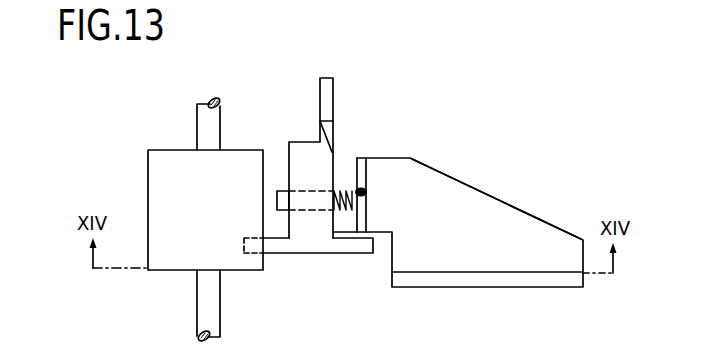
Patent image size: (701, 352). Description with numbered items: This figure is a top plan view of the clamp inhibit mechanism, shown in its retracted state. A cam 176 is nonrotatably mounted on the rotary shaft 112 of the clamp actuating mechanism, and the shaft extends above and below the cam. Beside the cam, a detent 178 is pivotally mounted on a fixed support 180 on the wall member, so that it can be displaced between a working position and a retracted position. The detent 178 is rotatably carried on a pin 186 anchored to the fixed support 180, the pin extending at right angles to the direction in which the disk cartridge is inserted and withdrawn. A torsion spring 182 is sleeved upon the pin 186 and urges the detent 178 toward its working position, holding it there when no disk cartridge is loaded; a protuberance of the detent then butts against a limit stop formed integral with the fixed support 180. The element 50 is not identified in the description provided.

The cam 50 is at (475, 171).
The rotary shaft 112 is at (198, 127).
The cam 176 is at (155, 178).
The detent 178 is at (320, 248).
The fixed support 180 is at (513, 220).
The torsion spring 182 is at (340, 188).
The pin 186 is at (286, 189).